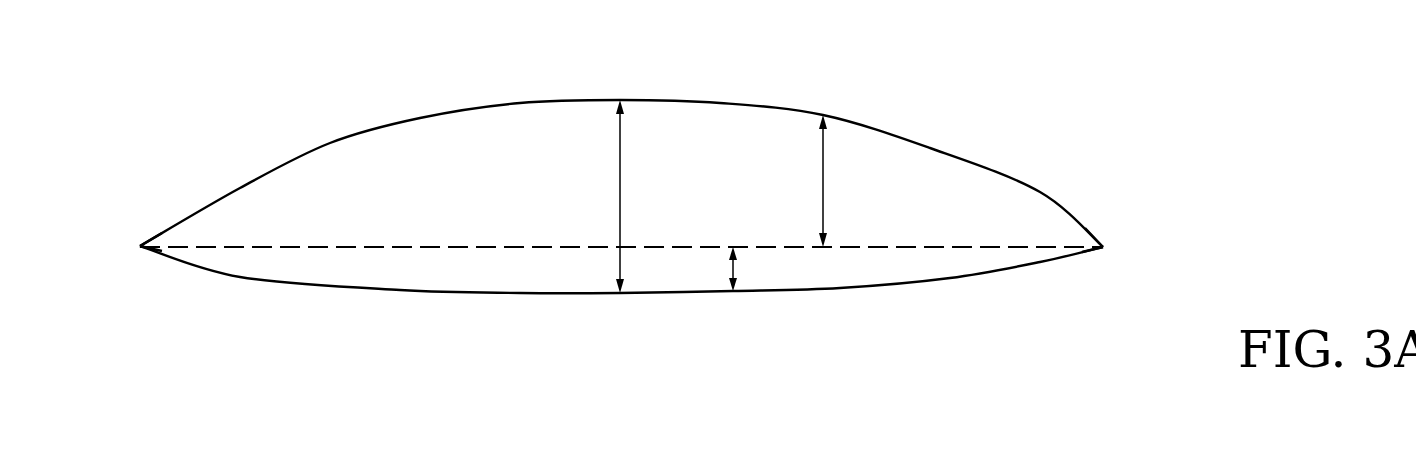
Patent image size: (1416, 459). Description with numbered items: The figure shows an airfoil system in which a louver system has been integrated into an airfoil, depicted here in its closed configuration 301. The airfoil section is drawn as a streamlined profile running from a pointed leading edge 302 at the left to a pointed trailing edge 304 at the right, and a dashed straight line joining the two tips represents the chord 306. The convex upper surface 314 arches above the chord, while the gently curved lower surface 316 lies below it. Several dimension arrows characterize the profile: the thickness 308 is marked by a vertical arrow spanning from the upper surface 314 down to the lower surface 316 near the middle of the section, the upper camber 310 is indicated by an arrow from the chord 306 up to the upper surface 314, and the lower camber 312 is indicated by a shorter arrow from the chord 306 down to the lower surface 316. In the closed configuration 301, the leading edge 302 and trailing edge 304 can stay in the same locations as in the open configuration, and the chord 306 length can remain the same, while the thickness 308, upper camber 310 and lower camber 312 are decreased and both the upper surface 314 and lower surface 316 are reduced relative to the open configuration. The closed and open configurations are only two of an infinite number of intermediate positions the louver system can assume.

The closed configuration 301 is at (1148, 201).
The leading edge 302 is at (140, 246).
The trailing edge 304 is at (1103, 247).
The chord 306 is at (400, 247).
The thickness 308 is at (620, 148).
The upper camber 310 is at (823, 160).
The lower camber 312 is at (740, 282).
The upper surface 314 is at (420, 118).
The lower surface 316 is at (560, 295).